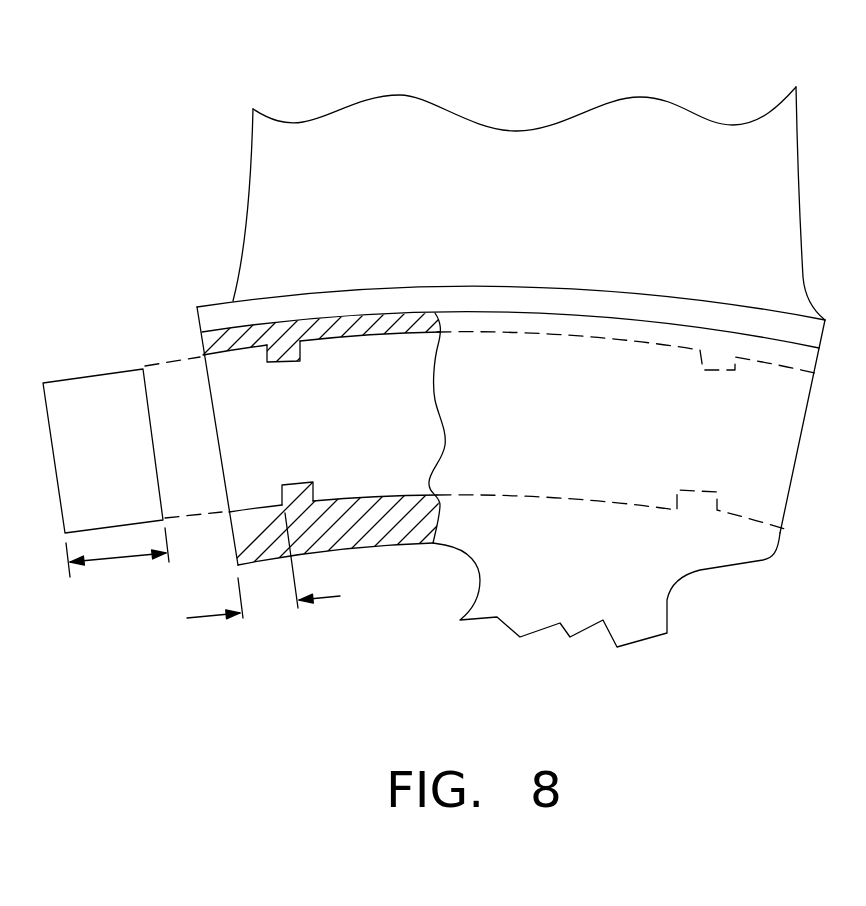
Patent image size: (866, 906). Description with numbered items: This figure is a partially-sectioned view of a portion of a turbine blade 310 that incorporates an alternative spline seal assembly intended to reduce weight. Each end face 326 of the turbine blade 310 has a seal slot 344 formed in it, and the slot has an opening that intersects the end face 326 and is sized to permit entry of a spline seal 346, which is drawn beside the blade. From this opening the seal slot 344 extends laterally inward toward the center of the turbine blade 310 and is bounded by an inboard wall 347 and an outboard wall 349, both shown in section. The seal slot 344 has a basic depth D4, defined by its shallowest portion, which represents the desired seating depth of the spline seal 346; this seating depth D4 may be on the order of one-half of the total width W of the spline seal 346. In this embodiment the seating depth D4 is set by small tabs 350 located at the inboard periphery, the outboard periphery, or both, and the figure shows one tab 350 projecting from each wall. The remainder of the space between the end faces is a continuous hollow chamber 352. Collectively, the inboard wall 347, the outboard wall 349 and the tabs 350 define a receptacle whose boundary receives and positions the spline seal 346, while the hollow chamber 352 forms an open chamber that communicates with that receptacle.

The turbine blade 310 is at (565, 88).
The end face 326 is at (197, 322).
The seal slot 344 is at (203, 402).
The spline seal 346 is at (130, 457).
The inboard wall 347 is at (338, 495).
The outboard wall 349 is at (322, 343).
The tabs 350 is at (297, 362).
The hollow chamber 352 is at (422, 425).
The total width W is at (118, 560).
The basic depth D4 is at (207, 617).